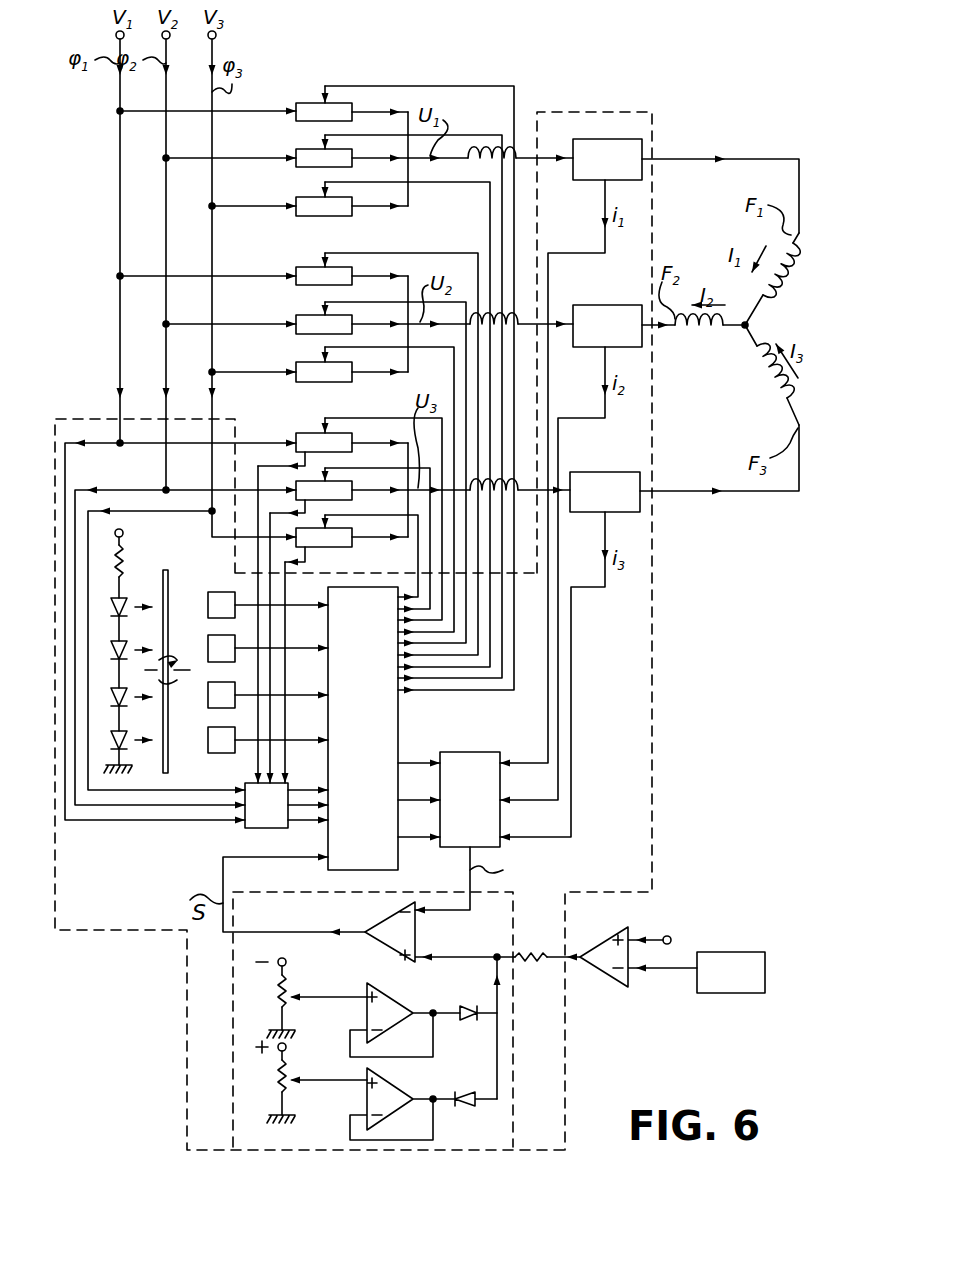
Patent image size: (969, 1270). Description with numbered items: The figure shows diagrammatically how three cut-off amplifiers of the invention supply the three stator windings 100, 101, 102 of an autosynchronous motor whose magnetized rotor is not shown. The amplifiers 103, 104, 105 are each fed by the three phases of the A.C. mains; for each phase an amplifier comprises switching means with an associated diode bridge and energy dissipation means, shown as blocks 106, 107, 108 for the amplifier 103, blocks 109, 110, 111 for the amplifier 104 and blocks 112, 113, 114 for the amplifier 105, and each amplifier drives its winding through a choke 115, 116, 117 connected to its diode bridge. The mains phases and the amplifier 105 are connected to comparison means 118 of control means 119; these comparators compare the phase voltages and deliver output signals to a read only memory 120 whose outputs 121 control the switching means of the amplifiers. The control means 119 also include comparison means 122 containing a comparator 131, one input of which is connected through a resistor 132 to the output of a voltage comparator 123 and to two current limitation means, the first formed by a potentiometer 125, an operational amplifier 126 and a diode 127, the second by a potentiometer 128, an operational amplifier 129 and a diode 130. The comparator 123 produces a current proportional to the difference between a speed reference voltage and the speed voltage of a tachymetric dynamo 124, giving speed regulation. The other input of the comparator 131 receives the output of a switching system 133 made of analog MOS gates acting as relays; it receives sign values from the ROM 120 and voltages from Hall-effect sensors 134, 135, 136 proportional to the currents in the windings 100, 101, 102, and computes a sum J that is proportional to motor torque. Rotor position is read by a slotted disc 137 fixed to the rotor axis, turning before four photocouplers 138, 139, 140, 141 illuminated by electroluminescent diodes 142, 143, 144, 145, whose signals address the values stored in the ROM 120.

The winding 100 is at (795, 280).
The winding 101 is at (717, 332).
The winding 102 is at (757, 383).
The cut-off amplifier 103 is at (302, 86).
The cut-off amplifier 104 is at (307, 258).
The cut-off amplifier 105 is at (310, 423).
The switching means with diode bridge and dissipation means 106 is at (302, 120).
The switching means with diode bridge and dissipation means 107 is at (302, 168).
The switching means with diode bridge and dissipation means 108 is at (302, 216).
The switching means with diode bridge and dissipation means 109 is at (300, 272).
The switching means with diode bridge and dissipation means 110 is at (300, 316).
The switching means with diode bridge and dissipation means 111 is at (300, 364).
The switching means with diode bridge and dissipation means 112 is at (300, 438).
The switching means with diode bridge and dissipation means 113 is at (293, 482).
The switching means with diode bridge and dissipation means 114 is at (343, 547).
The choke 115 is at (480, 143).
The choke 116 is at (523, 322).
The choke 117 is at (523, 488).
The comparison means 118 is at (263, 825).
The control means 119 is at (134, 930).
The read only memory (ROM) 120 is at (376, 862).
The outputs 121 is at (475, 696).
The comparison means 122 is at (187, 1100).
The voltage comparator 123 is at (623, 989).
The tachymetric dynamo 124 is at (714, 978).
The potentiometer 125 is at (282, 1002).
The operational amplifier 126 is at (390, 998).
The diode 127 is at (475, 993).
The potentiometer 128 is at (282, 1071).
The operational amplifier 129 is at (388, 1100).
The diode 130 is at (463, 1093).
The comparator 131 is at (392, 925).
The resistor 132 is at (533, 964).
The switching system 133 is at (463, 767).
The sensor 134 is at (621, 152).
The sensor 135 is at (625, 338).
The sensor 136 is at (625, 495).
The disc 137 is at (165, 773).
The photocoupler 138 is at (220, 595).
The photocoupler 139 is at (210, 652).
The photocoupler 140 is at (218, 695).
The photocoupler 141 is at (218, 743).
The electroluminescent diode 142 is at (106, 615).
The electroluminescent diode 143 is at (106, 658).
The electroluminescent diode 144 is at (106, 705).
The electroluminescent diode 145 is at (106, 748).